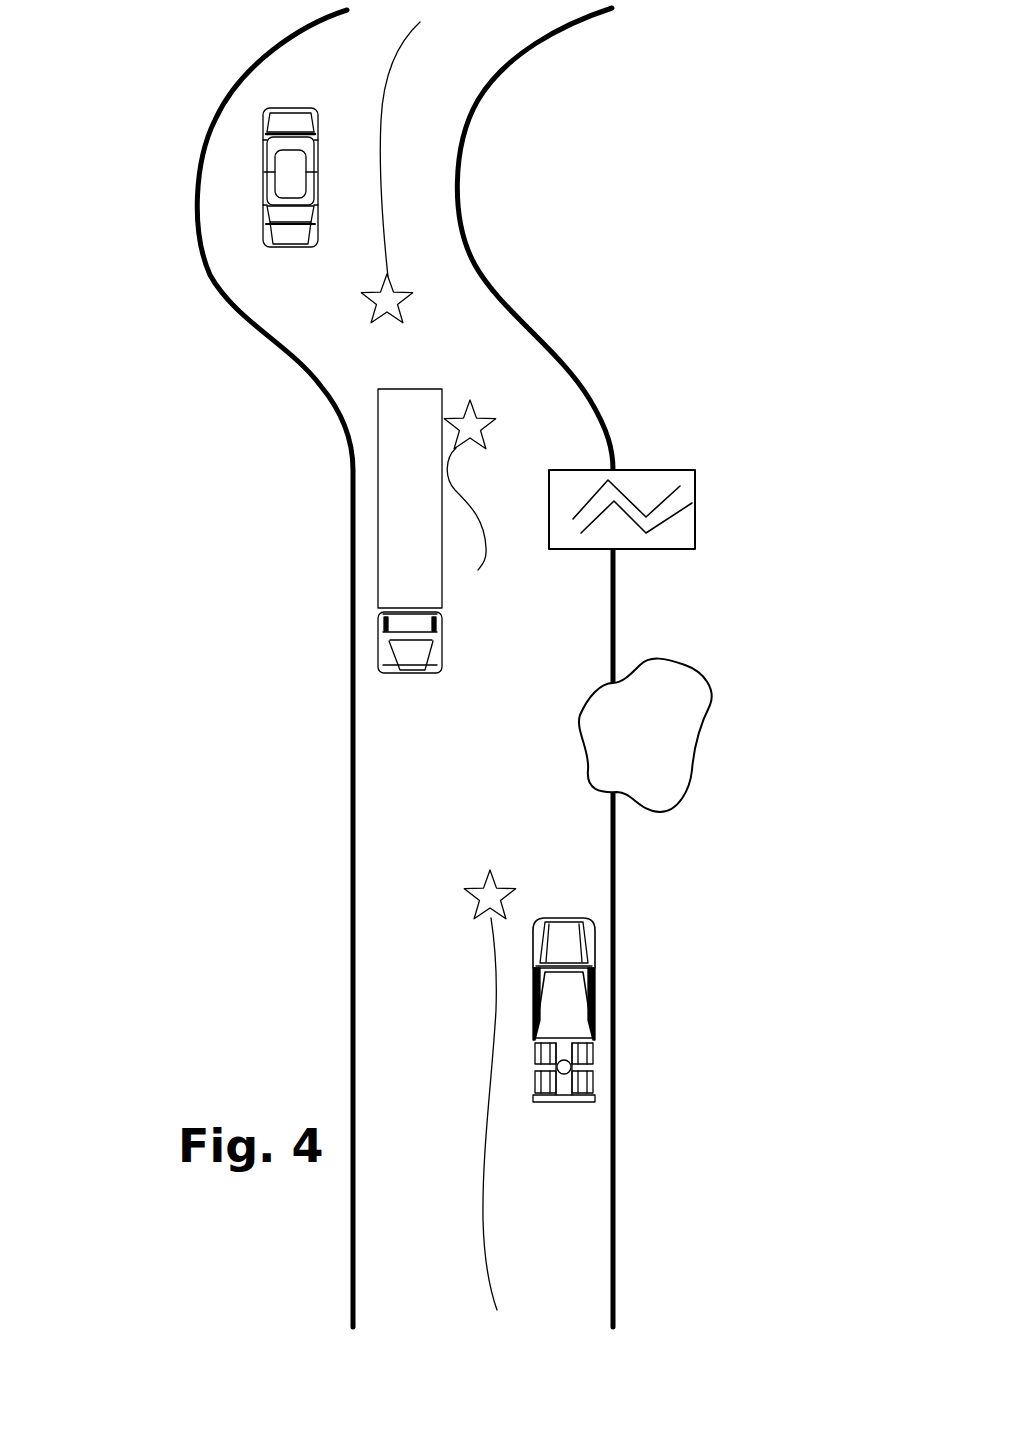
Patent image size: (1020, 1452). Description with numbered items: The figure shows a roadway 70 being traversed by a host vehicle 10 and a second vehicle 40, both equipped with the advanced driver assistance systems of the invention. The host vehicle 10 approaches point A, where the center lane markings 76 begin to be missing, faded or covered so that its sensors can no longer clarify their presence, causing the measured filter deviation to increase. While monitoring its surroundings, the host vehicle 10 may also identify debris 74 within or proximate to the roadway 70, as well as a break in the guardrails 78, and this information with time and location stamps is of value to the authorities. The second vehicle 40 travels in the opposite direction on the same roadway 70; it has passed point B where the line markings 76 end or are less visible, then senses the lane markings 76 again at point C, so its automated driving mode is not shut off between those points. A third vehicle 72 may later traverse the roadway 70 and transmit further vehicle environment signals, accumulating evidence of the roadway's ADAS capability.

The roadway 70 is at (152, 128).
The third vehicle 72 is at (323, 117).
The center lane markings 76 is at (384, 180).
The second vehicle 40 is at (440, 648).
The guardrails 78 is at (697, 514).
The debris 74 is at (645, 735).
The host vehicle 10 is at (573, 1017).